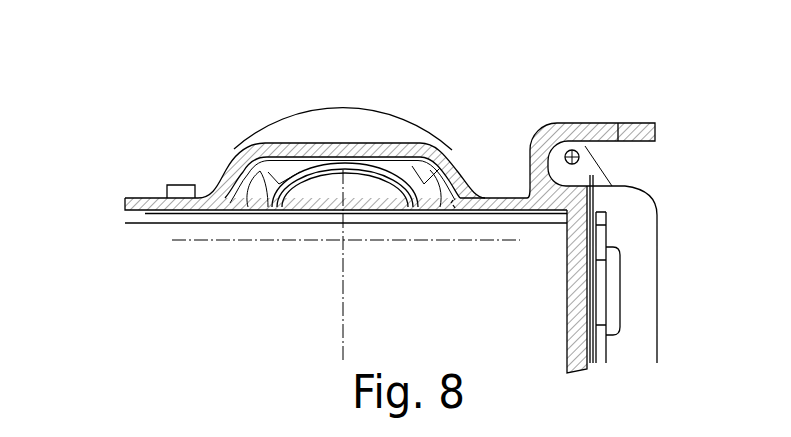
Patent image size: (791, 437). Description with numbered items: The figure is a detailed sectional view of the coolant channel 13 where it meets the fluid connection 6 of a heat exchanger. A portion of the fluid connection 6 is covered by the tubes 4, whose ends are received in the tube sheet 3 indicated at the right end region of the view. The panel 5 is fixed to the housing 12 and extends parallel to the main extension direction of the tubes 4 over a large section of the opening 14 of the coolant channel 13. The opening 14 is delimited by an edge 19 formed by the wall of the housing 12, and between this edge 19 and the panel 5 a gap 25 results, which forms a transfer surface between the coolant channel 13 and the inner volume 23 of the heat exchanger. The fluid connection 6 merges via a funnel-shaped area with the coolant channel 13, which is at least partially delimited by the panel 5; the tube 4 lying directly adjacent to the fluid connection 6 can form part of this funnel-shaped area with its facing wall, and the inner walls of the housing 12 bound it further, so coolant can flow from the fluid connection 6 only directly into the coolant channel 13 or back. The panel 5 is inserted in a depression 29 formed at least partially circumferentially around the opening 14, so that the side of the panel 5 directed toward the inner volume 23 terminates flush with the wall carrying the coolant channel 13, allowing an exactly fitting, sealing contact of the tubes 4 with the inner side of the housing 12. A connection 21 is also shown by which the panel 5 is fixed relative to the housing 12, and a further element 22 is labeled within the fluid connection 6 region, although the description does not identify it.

The tube sheet 3 is at (656, 127).
The tubes 4 is at (488, 297).
The panel 5 is at (238, 168).
The fluid connection 6 is at (300, 128).
The housing 12 is at (504, 198).
The coolant channel 13 is at (453, 205).
The opening 14 is at (325, 226).
The edge 19 is at (453, 205).
The connection 21 is at (182, 185).
The inner race ring 22 is at (311, 190).
The inner volume 23 is at (160, 265).
The gap 25 is at (451, 204).
The depression 29 is at (137, 193).